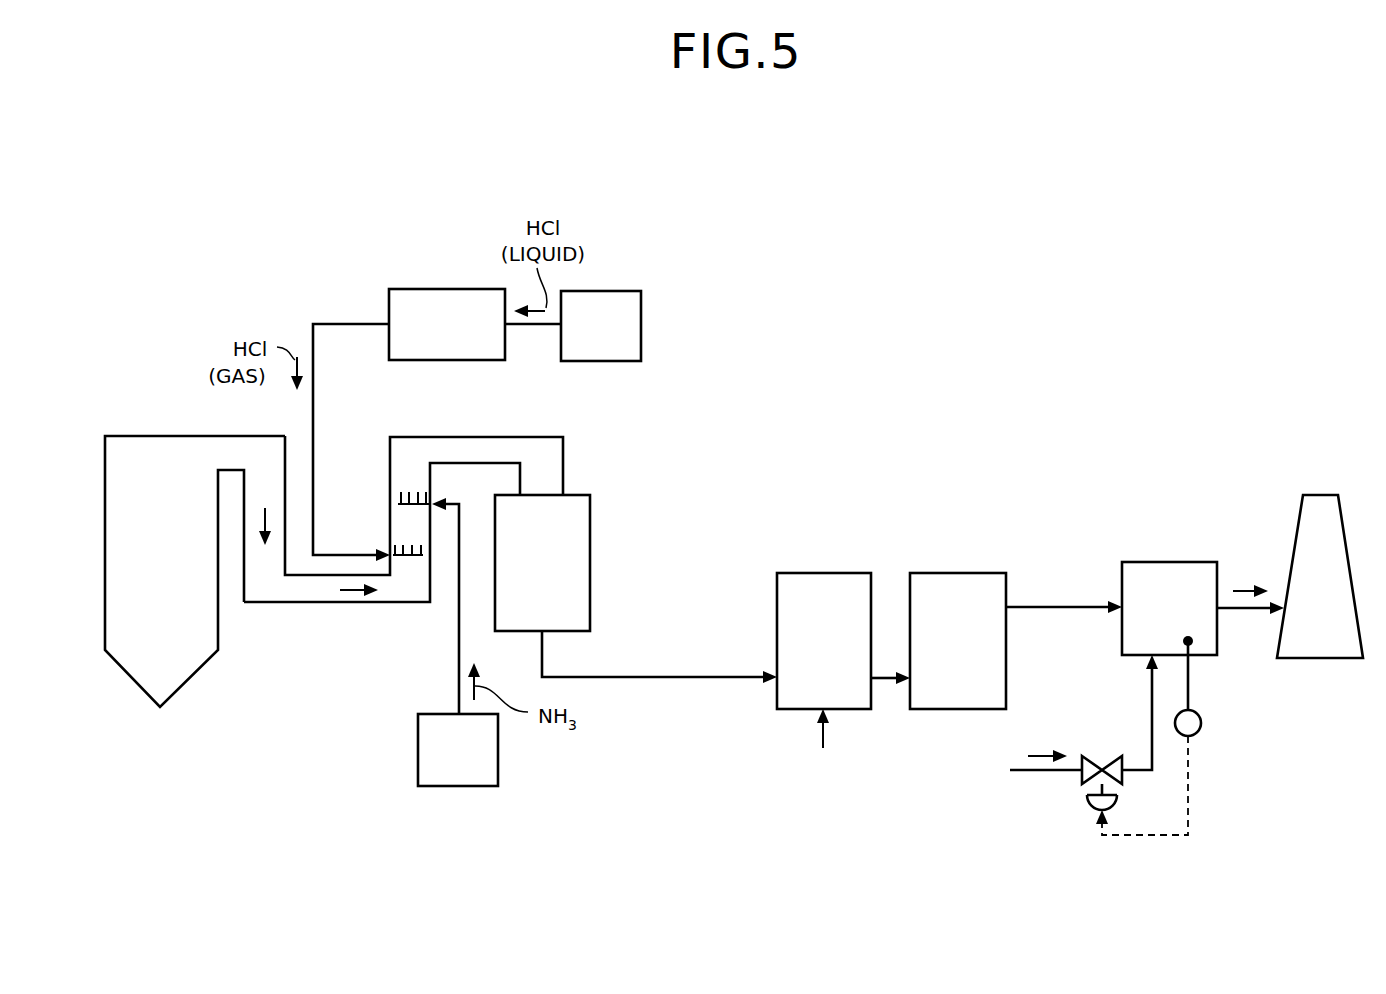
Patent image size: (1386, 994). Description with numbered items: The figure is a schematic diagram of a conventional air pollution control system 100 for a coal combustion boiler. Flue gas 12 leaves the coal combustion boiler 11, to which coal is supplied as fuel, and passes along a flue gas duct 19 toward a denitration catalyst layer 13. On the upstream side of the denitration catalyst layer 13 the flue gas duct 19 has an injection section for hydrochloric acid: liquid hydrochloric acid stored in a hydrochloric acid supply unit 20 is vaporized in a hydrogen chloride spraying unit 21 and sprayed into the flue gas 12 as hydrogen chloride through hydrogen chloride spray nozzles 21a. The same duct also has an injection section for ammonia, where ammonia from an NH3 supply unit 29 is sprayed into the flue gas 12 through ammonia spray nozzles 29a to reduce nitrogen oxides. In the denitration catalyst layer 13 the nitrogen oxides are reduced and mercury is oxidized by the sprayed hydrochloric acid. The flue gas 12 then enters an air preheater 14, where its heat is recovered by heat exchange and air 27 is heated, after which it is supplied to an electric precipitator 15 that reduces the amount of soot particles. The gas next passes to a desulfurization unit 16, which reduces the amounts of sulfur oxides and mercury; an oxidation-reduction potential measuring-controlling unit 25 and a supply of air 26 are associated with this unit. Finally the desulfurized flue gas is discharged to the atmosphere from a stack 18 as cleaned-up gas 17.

The air pollution control system 100 is at (288, 204).
The coal combustion boiler 11 is at (160, 436).
The flue gas 12 is at (353, 600).
The denitration catalyst layer 13 is at (590, 553).
The air preheater 14 is at (843, 573).
The electric precipitator 15 is at (966, 573).
The desulfurization unit 16 is at (1170, 562).
The cleaned-up gas 17 is at (1247, 583).
The stack 18 is at (1322, 495).
The flue gas duct 19 is at (267, 605).
The hydrochloric acid supply unit 20 is at (623, 291).
The hydrogen chloride spraying unit 21 is at (417, 289).
The hydrogen chloride spray nozzles 21a is at (394, 552).
The oxidation-reduction potential measuring-controlling unit 25 is at (1201, 722).
The air 26 is at (1050, 750).
The air 27 is at (822, 735).
The NH3 supply unit 29 is at (458, 788).
The ammonia spray nozzles 29a is at (398, 502).